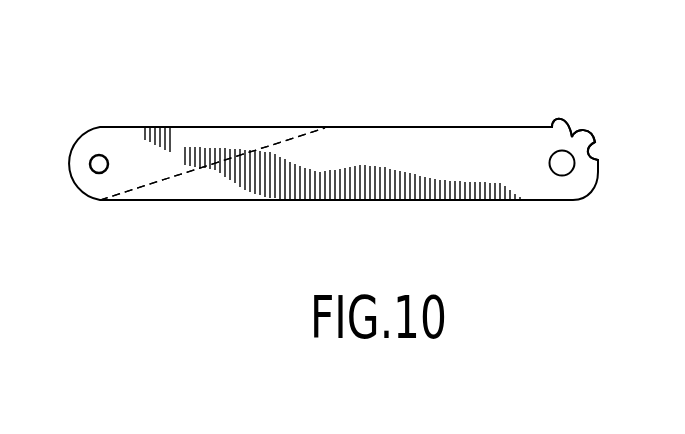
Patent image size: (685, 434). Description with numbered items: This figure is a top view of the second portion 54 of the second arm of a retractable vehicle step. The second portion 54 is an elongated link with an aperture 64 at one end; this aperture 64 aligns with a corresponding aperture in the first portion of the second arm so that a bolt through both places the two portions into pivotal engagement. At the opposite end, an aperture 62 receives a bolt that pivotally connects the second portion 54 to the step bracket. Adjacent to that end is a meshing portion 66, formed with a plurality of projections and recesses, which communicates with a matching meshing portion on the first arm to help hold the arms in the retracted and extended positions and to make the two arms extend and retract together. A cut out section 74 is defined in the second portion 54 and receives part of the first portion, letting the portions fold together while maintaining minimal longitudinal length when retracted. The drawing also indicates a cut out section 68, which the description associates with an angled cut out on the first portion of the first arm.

The second portion 54 is at (383, 133).
The aperture 62 is at (560, 160).
The aperture 64 is at (96, 155).
The meshing portion 66 is at (606, 108).
The cut out section 68 is at (410, 165).
The cut out section 74 is at (178, 131).